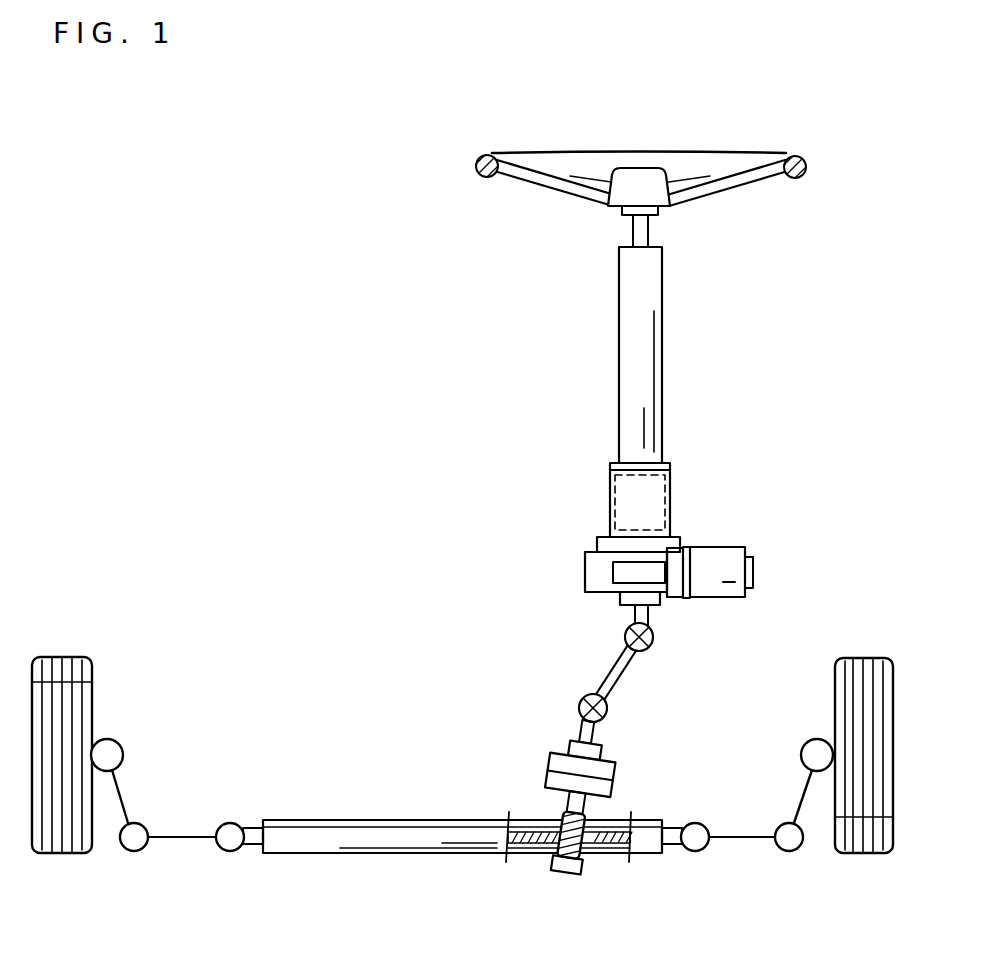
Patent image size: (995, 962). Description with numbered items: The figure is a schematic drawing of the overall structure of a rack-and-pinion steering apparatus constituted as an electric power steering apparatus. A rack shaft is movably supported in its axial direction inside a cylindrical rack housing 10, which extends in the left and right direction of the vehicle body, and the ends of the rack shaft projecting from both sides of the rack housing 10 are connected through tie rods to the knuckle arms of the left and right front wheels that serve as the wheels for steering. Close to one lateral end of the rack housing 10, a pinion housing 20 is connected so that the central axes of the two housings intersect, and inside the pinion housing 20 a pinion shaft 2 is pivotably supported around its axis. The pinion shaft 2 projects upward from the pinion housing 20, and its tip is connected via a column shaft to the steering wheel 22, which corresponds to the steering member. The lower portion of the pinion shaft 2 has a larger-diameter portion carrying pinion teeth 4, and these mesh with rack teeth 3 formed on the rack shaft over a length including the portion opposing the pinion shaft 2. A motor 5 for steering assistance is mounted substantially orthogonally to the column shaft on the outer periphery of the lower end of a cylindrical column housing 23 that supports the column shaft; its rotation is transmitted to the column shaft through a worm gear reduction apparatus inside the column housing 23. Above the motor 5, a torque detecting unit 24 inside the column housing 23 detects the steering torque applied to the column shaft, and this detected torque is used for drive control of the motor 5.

The pinion shaft 2 is at (597, 728).
The rack teeth 3 is at (533, 852).
The pinion teeth 4 is at (583, 857).
The motor 5 is at (717, 553).
The rack housing 10 is at (422, 823).
The pinion housing 20 is at (555, 803).
The steering wheel 22 is at (474, 164).
The column housing 23 is at (658, 291).
The torque detecting unit 24 is at (602, 503).